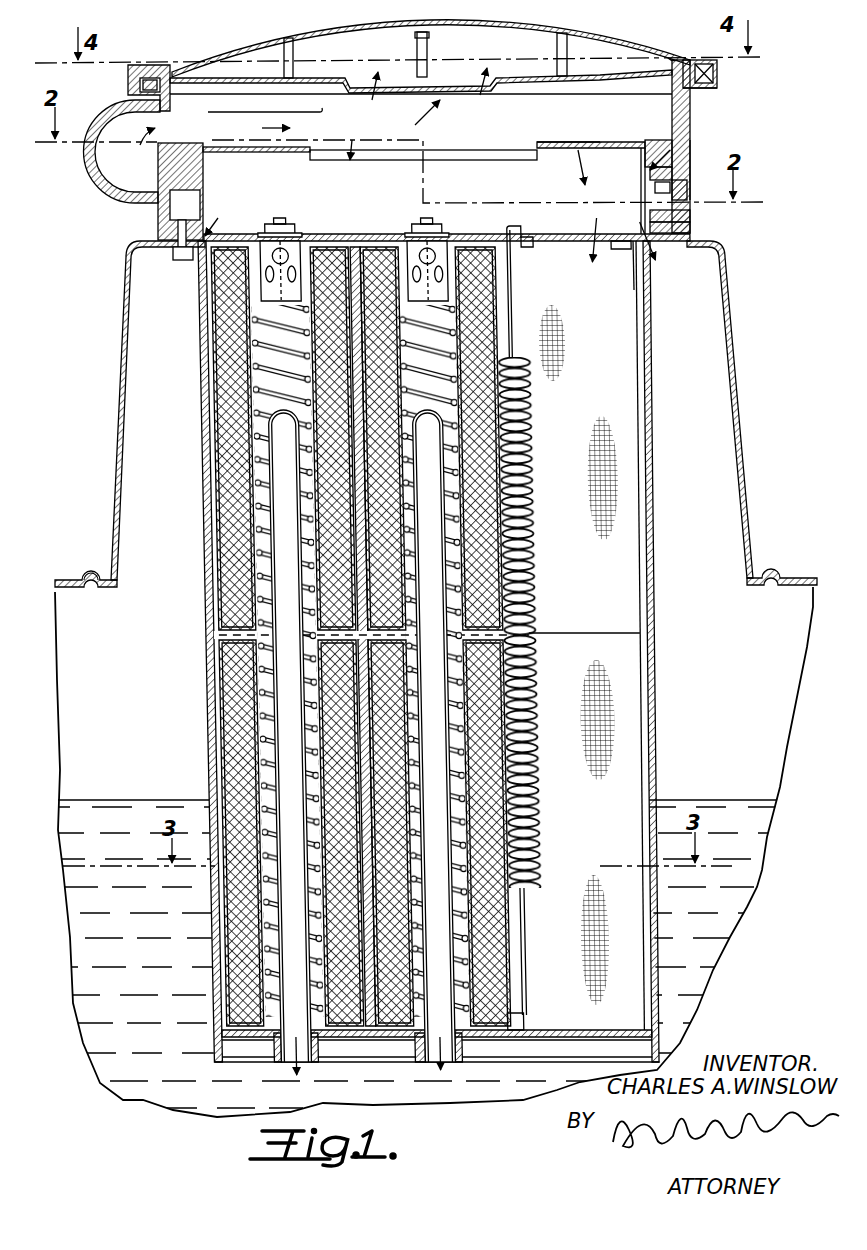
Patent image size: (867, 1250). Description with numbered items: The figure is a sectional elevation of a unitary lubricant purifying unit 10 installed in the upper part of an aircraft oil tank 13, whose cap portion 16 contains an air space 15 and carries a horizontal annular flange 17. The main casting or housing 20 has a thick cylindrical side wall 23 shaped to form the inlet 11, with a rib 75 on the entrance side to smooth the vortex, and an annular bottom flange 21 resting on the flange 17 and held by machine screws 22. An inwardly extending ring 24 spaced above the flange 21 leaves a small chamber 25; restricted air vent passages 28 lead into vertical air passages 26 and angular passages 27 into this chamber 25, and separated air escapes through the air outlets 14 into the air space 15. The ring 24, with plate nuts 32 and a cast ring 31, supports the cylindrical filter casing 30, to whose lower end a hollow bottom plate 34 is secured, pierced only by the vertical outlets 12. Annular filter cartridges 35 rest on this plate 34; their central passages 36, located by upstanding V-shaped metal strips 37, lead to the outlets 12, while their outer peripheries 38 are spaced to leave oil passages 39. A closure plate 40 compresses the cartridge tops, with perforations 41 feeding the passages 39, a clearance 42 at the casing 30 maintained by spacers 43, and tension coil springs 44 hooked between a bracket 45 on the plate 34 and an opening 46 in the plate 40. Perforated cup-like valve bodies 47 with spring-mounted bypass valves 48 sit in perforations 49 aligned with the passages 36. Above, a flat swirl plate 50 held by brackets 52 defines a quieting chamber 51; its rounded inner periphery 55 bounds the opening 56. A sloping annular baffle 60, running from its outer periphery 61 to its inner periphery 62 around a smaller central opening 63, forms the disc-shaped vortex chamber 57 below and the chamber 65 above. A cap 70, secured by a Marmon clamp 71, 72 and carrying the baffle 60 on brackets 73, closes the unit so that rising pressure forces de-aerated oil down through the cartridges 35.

The lubricant purifying unit 10 is at (700, 132).
The inlet 11 is at (118, 180).
The vertical outlets 12 is at (297, 1062).
The oil tank 13 is at (80, 578).
The air outlets 14 is at (660, 252).
The air space 15 is at (723, 515).
The cap portion 16 is at (742, 458).
The annular flange 17 is at (718, 239).
The housing 20 is at (690, 214).
The bottom flange 21 is at (690, 227).
The machine screws 22 is at (180, 260).
The side wall 23 is at (692, 150).
The ring 24 is at (685, 183).
The chamber 25 is at (690, 196).
The vertical air passages 26 is at (690, 108).
The angularly extending air passages 27 is at (685, 170).
The air vent passages 28 is at (673, 58).
The filter casing 30 is at (650, 478).
The cast ring 31 is at (660, 140).
The plate nuts 32 is at (641, 192).
The bottom plate 34 is at (480, 1040).
The filter cartridges 35 is at (211, 373).
The central passages 36 is at (257, 930).
The outlet tube 37 is at (281, 837).
The outer peripheries 38 is at (493, 548).
The oil passages 39 is at (206, 735).
The closure plate 40 is at (533, 242).
The perforations 41 is at (603, 240).
The clearance 42 is at (640, 252).
The spacers 43 is at (630, 250).
The coil springs 44 is at (529, 414).
The bracket 45 is at (508, 1016).
The opening 46 is at (519, 232).
The valve bodies 47 is at (305, 236).
The bypass valves 48 is at (290, 225).
The perforations 49 is at (409, 232).
The swirl plate 50 is at (582, 140).
The quieting chamber 51 is at (534, 193).
The brackets 52 is at (628, 140).
The inner periphery 55 is at (545, 150).
The opening 56 is at (498, 147).
The vortex chamber 57 is at (531, 120).
The baffle 60 is at (318, 77).
The outer periphery 61 is at (205, 112).
The inner periphery 62 is at (442, 96).
The central opening 63 is at (470, 80).
The chamber 65 is at (388, 52).
The cap 70 is at (528, 25).
The Marmon clamp 71 is at (718, 72).
The Marmon clamp 72 is at (718, 84).
The brackets 73 is at (292, 52).
The rib 75 is at (160, 160).